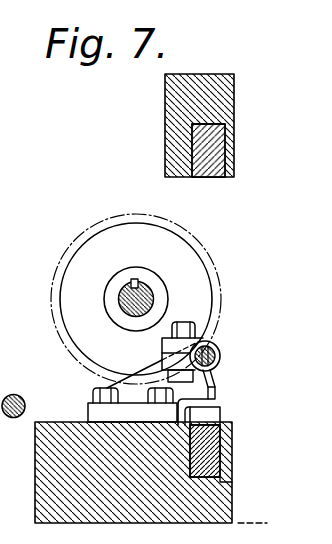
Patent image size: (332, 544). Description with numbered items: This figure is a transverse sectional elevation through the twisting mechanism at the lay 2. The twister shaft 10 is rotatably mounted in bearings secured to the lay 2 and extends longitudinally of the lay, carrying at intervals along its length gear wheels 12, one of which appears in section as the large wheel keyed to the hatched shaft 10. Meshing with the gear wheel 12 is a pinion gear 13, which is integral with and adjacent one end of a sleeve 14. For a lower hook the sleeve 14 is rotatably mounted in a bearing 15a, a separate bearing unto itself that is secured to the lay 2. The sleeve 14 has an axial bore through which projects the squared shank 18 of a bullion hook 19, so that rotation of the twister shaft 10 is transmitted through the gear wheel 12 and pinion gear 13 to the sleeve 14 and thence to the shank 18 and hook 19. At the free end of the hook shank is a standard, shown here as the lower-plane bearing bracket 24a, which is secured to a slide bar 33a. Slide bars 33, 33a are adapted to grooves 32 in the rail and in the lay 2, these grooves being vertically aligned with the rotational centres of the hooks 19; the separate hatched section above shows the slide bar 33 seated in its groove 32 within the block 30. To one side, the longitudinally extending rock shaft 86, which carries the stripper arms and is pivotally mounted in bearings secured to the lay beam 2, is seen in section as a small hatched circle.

The lay 2 is at (57, 455).
The twister shaft 10 is at (120, 295).
The gear wheel 12 is at (183, 232).
The pinion gear 13 is at (215, 368).
The sleeve 14 is at (212, 388).
The bearing 15a is at (210, 343).
The squared shank 18 is at (218, 352).
The bullion hook 19 is at (213, 349).
The standard 24a is at (210, 415).
The block 30 is at (213, 100).
The groove 32 is at (213, 122).
The slide bar 33 is at (210, 160).
The slide bar 33a is at (208, 443).
The rock shaft 86 is at (28, 388).